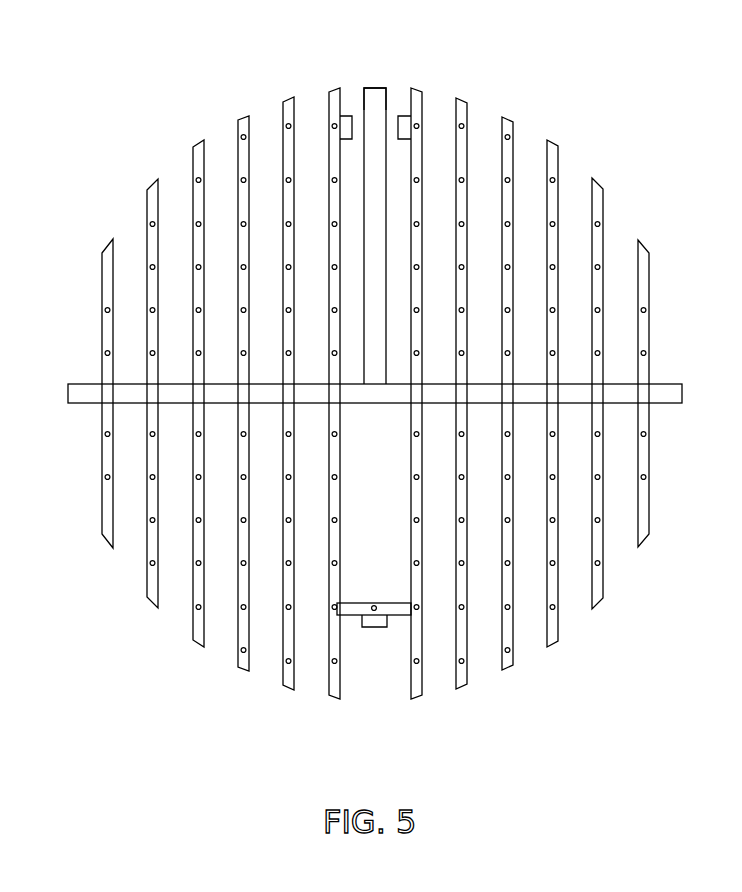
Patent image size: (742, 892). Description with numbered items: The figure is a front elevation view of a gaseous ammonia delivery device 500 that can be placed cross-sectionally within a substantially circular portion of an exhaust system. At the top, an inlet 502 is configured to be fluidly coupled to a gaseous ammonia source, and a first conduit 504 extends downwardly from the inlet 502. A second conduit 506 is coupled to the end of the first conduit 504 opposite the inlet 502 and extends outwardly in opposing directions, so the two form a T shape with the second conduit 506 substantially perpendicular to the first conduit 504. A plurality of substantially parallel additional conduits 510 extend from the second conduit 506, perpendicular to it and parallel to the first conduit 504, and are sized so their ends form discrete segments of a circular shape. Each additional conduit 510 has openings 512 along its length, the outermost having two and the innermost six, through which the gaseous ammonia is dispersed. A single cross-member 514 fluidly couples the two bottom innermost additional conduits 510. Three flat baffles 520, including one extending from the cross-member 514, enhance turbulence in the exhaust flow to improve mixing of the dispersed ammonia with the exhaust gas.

The gaseous ammonia delivery device 500 is at (645, 88).
The inlet 502 is at (375, 87).
The first conduit 504 is at (362, 98).
The second conduit 506 is at (68, 396).
The additional conduit 510 is at (192, 168).
The opening 512 is at (557, 180).
The cross-member 514 is at (397, 603).
The baffle 520 is at (343, 123).